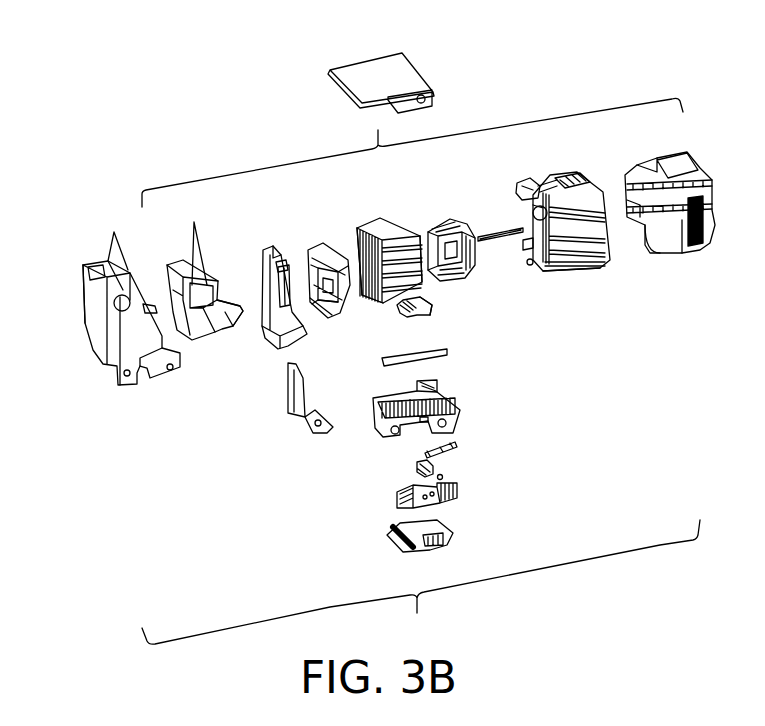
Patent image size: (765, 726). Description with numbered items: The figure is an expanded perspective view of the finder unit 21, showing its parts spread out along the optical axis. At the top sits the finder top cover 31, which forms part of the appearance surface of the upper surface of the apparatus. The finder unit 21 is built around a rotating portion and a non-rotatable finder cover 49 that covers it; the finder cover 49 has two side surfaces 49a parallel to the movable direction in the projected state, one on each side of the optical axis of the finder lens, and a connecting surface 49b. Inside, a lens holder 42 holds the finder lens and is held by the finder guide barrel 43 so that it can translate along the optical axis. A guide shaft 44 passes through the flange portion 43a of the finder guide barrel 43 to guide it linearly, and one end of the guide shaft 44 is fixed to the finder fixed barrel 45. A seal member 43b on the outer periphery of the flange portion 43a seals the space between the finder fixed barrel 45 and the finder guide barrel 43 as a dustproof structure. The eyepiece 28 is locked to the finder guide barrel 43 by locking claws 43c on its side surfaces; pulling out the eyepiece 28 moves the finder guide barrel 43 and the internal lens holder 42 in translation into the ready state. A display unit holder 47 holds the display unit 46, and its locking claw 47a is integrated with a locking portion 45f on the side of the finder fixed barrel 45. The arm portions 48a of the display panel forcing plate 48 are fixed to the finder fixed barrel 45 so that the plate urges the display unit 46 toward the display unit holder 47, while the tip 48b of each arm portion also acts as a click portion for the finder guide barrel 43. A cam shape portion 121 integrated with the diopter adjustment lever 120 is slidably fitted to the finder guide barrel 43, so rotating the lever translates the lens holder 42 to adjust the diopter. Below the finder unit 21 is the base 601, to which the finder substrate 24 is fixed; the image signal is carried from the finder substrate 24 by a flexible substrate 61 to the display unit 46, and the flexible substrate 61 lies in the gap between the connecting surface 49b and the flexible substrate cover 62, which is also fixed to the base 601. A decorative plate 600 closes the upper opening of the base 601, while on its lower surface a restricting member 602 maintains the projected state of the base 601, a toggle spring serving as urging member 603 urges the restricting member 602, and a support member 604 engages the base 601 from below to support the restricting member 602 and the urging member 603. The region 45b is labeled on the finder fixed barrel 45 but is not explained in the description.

The finder unit 21 is at (421, 583).
The finder substrate 24 is at (457, 540).
The eyepiece 28 is at (662, 153).
The finder top cover 31 is at (404, 56).
The lens holder 42 is at (438, 230).
The finder guide barrel 43 is at (385, 222).
The flange portion 43a is at (377, 303).
The seal member 43b is at (357, 228).
The locking claws 43c is at (390, 243).
The guide shaft 44 is at (497, 227).
The finder fixed barrel 45 is at (563, 166).
The drive assembly upper portion 45b is at (541, 186).
The locking portion 45f is at (555, 271).
The display unit 46 is at (293, 318).
The display unit holder 47 is at (308, 247).
The locking claw 47a is at (338, 310).
The display panel forcing plate 48 is at (171, 262).
The arm portions 48a is at (192, 239).
The tip 48b is at (225, 329).
The finder cover 49 is at (87, 255).
The side surfaces 49a is at (114, 232).
The connecting surface 49b is at (84, 312).
The flexible substrate 61 is at (262, 250).
The flexible substrate cover 62 is at (288, 380).
The diopter adjustment lever 120 is at (432, 314).
The cam shape portion 121 is at (436, 301).
The decorative plate 600 is at (447, 354).
The base 601 is at (437, 392).
The restricting member 602 is at (458, 446).
The urging member 603 is at (441, 468).
The support member 604 is at (463, 489).